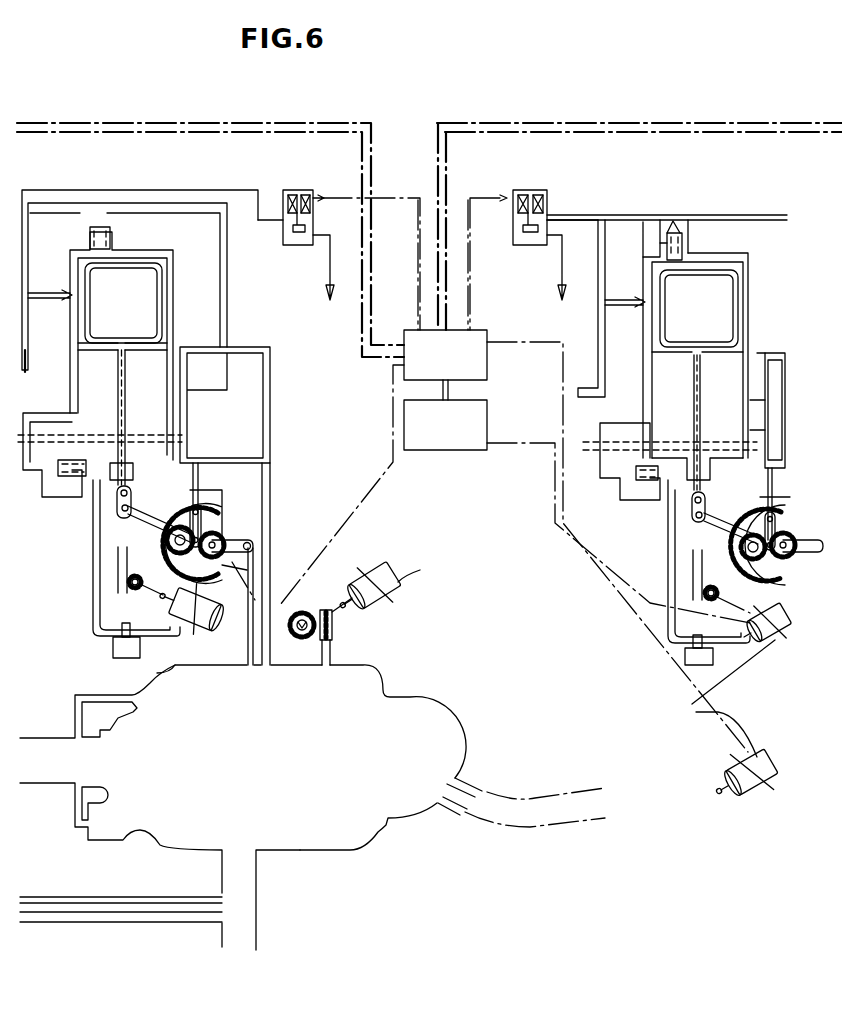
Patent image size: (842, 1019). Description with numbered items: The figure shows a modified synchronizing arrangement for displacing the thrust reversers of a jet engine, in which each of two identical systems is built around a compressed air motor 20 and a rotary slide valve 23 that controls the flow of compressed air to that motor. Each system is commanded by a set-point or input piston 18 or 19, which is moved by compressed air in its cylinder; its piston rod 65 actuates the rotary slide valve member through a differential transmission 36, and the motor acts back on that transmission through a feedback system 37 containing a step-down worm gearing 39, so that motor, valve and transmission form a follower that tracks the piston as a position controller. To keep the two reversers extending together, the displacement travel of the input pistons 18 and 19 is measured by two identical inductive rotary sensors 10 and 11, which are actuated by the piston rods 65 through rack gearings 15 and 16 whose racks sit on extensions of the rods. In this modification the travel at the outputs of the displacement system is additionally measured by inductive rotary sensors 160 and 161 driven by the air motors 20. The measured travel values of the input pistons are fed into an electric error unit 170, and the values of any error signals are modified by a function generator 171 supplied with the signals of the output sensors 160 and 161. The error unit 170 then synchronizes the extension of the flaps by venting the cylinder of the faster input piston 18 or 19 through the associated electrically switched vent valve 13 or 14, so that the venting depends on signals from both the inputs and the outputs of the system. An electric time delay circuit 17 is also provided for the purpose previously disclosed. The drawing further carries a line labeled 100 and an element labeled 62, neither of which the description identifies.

The electric time delay circuit 17 is at (640, 124).
The vent valve 13 is at (314, 188).
The vent valve 14 is at (540, 189).
The control line 100 is at (365, 262).
The electric error unit 170 is at (480, 332).
The function generator 171 is at (445, 440).
The signal line 62 is at (372, 336).
The input piston 18 is at (168, 290).
The input piston 19 is at (658, 293).
The piston rod 65 is at (127, 398).
The differential transmission 36 is at (250, 505).
The rack gearing 15 is at (132, 585).
The rack gearing 16 is at (706, 597).
The inductive rotary sensor 10 is at (183, 636).
The inductive rotary sensor 11 is at (768, 645).
The feedback system 37 is at (284, 602).
The step-down worm gearing 39 is at (328, 612).
The inductive rotary sensor 160 is at (386, 592).
The inductive rotary sensor 161 is at (740, 757).
The compressed air motor 20 is at (414, 848).
The rotary slide valve 23 is at (106, 730).